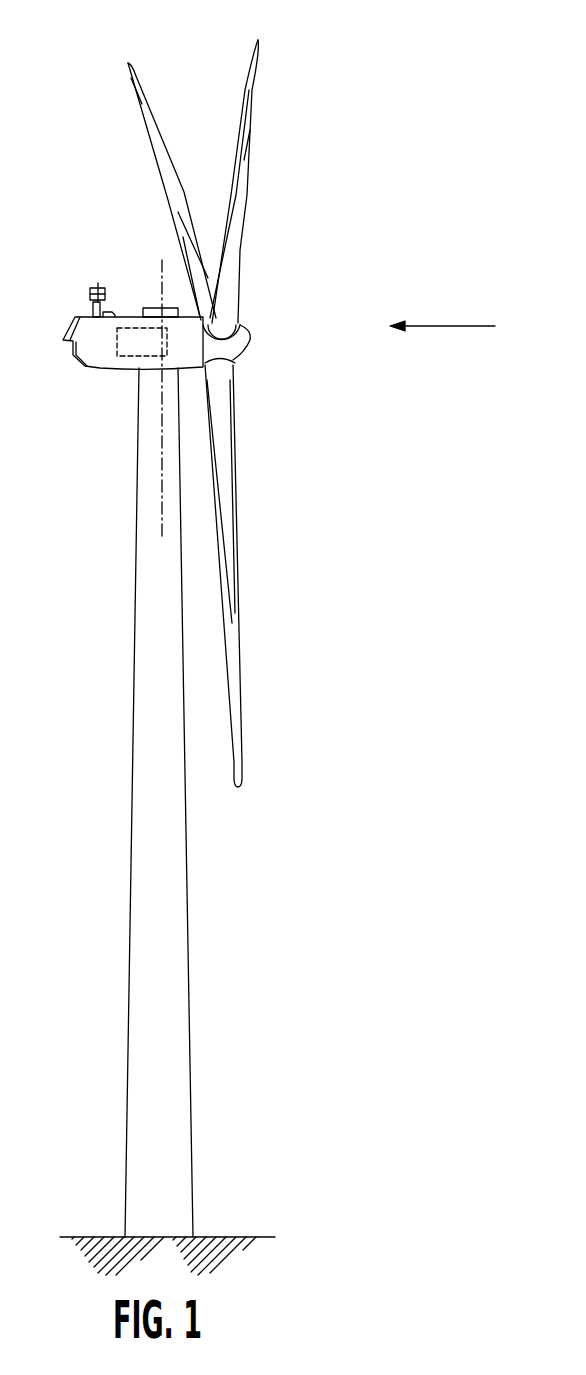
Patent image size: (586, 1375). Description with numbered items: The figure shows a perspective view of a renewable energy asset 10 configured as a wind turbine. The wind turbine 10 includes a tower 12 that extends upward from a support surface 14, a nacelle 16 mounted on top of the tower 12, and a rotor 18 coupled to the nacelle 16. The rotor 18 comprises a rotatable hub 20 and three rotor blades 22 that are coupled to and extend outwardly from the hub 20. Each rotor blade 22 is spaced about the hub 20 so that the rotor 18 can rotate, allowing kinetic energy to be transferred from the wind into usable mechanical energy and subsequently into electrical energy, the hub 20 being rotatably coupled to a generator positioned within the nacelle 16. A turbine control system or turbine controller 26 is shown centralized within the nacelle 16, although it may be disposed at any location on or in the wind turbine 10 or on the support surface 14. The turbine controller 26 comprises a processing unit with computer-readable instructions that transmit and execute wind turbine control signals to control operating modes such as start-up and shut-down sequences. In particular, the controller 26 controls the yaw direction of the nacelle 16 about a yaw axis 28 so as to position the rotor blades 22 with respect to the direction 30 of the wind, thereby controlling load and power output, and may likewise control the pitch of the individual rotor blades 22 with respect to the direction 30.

The renewable energy asset 10 is at (438, 157).
The tower 12 is at (170, 873).
The support surface 14 is at (103, 1237).
The nacelle 16 is at (110, 368).
The rotor 18 is at (275, 313).
The rotatable hub 20 is at (258, 339).
The rotor blade 22 is at (248, 88).
The turbine controller 26 is at (135, 328).
The yaw axis 28 is at (158, 423).
The direction of the wind 30 is at (447, 327).